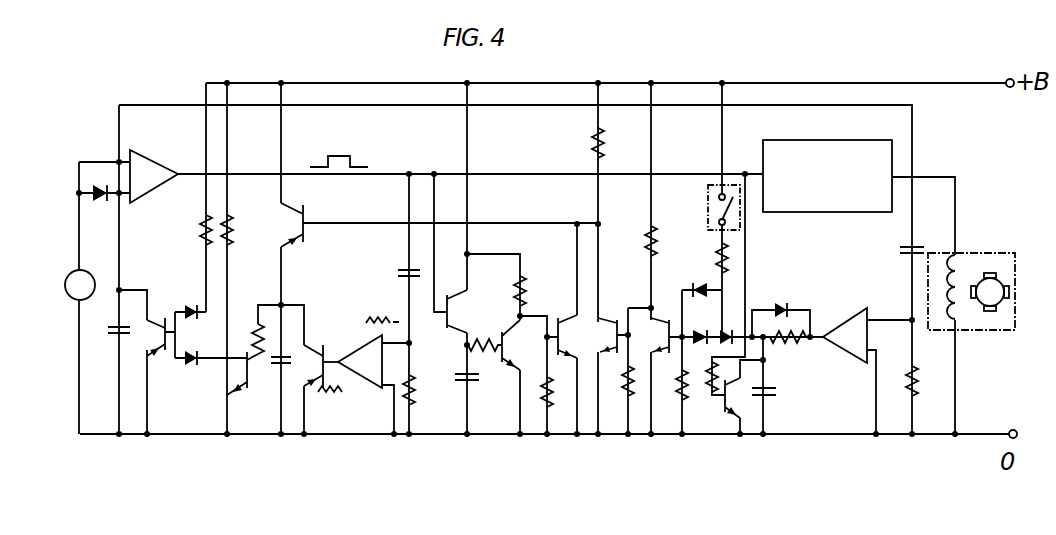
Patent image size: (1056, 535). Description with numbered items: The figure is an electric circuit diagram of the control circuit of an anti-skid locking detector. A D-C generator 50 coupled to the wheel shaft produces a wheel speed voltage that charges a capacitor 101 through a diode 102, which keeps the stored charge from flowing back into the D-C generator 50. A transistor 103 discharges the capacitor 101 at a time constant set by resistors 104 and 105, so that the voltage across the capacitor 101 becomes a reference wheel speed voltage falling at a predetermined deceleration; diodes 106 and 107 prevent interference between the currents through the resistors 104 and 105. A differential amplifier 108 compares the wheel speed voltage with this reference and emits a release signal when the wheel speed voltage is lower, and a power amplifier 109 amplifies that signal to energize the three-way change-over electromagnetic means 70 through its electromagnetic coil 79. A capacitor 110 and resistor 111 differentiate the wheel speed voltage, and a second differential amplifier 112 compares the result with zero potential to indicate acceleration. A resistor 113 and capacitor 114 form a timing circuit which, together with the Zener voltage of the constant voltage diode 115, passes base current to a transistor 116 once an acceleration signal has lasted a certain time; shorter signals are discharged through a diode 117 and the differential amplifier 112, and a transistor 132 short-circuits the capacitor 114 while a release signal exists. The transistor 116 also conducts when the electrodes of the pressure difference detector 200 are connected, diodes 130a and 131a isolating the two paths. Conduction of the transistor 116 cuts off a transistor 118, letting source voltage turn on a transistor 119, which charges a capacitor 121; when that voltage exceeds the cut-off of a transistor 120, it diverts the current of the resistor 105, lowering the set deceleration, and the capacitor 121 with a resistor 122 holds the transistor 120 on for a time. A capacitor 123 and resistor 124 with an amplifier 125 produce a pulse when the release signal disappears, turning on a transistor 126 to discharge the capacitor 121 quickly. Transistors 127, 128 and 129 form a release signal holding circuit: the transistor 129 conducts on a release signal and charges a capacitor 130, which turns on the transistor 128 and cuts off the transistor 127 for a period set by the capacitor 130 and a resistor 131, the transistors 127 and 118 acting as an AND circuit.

The D-C generator 50 is at (69, 277).
The three-way change-over electromagnetic means 70 is at (980, 253).
The electromagnetic coil 79 is at (960, 322).
The capacitor 101 is at (116, 336).
The diode 102 is at (101, 186).
The transistor 103 is at (157, 336).
The resistor 104 is at (204, 228).
The resistor 105 is at (230, 230).
The diode 106 is at (198, 304).
The diode 107 is at (200, 366).
The differential amplifier 108 is at (156, 162).
The power amplifier 109 is at (828, 141).
The capacitor 110 is at (900, 250).
The resistor 111 is at (913, 394).
The differential amplifier 112 is at (846, 318).
The resistor 113 is at (790, 342).
The capacitor 114 is at (777, 392).
The constant voltage diode 115 is at (722, 333).
The transistor 116 is at (670, 318).
The diode 117 is at (784, 306).
The transistor 118 is at (617, 320).
The transistor 119 is at (305, 218).
The transistor 120 is at (234, 392).
The capacitor 121 is at (287, 370).
The resistor 122 is at (255, 335).
The capacitor 123 is at (405, 266).
The resistor 124 is at (412, 388).
The amplifier 125 is at (352, 336).
The transistor 126 is at (322, 347).
The transistor 127 is at (569, 317).
The transistor 128 is at (504, 363).
The transistor 129 is at (449, 300).
The capacitor 130 is at (462, 376).
The diode 130a is at (698, 345).
The resistor 131 is at (485, 350).
The diode 131a is at (656, 238).
The transistor 132 is at (728, 413).
The pressure difference detector 200 is at (742, 228).